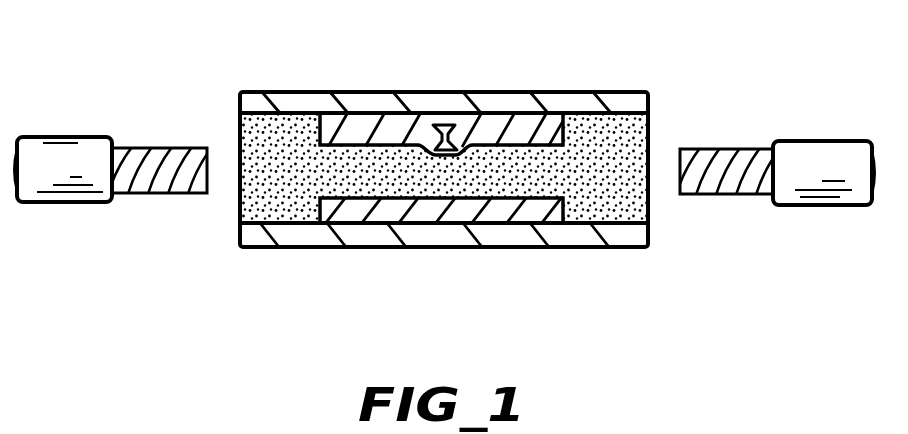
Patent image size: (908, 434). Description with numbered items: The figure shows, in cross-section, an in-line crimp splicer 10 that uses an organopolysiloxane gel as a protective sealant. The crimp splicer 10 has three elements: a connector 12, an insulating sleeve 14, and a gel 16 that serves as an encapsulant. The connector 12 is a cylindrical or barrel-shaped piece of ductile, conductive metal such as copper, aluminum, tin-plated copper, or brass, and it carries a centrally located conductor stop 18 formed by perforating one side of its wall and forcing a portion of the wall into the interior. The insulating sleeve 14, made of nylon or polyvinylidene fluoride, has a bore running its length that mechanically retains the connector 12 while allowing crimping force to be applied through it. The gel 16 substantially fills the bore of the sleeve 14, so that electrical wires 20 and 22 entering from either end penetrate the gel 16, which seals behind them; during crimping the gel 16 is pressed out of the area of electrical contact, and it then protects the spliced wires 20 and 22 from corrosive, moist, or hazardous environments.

The in-line crimp splicer 10 is at (440, 169).
The connector 12 is at (378, 212).
The insulating sleeve 14 is at (592, 100).
The gel 16 is at (288, 140).
The conductor stop 18 is at (440, 124).
The electrical wire 20 is at (88, 172).
The electrical wire 22 is at (797, 182).